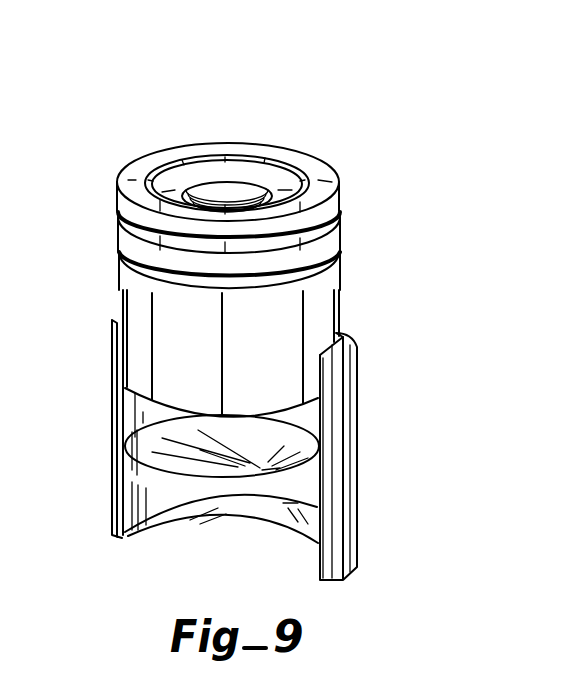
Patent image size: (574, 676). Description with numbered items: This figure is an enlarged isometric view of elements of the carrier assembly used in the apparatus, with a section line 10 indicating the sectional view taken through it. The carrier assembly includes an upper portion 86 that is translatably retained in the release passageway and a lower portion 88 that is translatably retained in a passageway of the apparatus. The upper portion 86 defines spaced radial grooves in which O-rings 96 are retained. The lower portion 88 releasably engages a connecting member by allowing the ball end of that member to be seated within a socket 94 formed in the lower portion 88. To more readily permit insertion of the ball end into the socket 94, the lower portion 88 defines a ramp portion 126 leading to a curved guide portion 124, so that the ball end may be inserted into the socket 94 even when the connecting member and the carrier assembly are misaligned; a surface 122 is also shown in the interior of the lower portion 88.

The section line 10- 10 is at (226, 195).
The upper portion 86 is at (340, 285).
The lower portion 88 is at (355, 357).
The socket 94 is at (303, 413).
The O-rings 96 is at (119, 252).
The lens 122 is at (308, 444).
The curved guide portion 124 is at (157, 499).
The ramp portion 126 is at (282, 511).